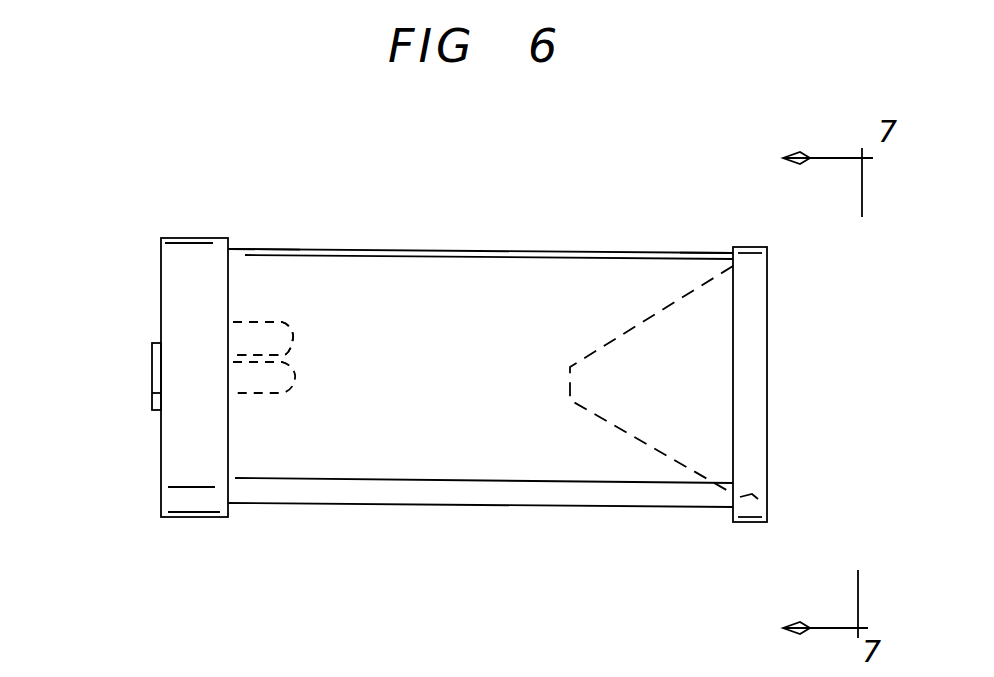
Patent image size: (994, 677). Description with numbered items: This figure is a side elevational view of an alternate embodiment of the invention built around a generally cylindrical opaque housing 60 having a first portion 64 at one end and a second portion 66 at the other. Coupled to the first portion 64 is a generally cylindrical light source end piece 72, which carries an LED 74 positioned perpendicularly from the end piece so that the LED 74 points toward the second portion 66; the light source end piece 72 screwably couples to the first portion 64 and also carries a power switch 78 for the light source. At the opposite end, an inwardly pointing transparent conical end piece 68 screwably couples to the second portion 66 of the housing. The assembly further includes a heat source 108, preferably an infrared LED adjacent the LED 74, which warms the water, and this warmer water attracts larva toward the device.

The lamp tube 60 is at (517, 252).
The first portion 64 is at (250, 248).
The second portion 66 is at (722, 248).
The transparent conical end piece 68 is at (753, 427).
The light source end piece 72 is at (172, 450).
The LED 74 is at (268, 397).
The power switch 78 is at (152, 357).
The heat source 108 is at (283, 323).